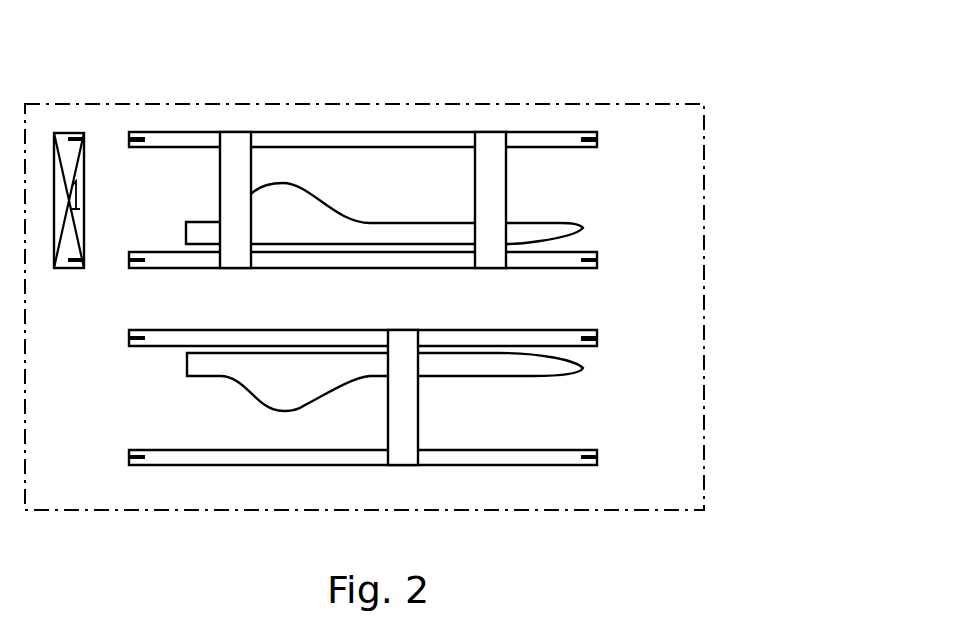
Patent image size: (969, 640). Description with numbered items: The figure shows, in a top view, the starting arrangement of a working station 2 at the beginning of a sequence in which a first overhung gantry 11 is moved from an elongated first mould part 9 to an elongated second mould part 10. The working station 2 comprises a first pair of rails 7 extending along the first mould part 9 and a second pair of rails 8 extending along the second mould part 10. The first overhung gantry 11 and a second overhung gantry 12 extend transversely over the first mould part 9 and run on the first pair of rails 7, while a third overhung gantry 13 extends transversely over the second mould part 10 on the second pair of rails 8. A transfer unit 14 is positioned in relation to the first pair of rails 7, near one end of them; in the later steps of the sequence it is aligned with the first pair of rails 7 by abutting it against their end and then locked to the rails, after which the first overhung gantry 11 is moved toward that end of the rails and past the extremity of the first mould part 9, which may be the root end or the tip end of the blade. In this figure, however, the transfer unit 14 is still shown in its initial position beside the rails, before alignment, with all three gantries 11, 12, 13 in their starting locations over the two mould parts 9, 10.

The working station 2 is at (718, 100).
The first pair of rails 7 is at (398, 140).
The second pair of rails 8 is at (467, 335).
The first mould part 9 is at (583, 228).
The second mould part 10 is at (583, 368).
The first overhung gantry 11 is at (238, 141).
The second overhung gantry 12 is at (491, 143).
The third overhung gantry 13 is at (403, 457).
The transfer unit 14 is at (68, 132).